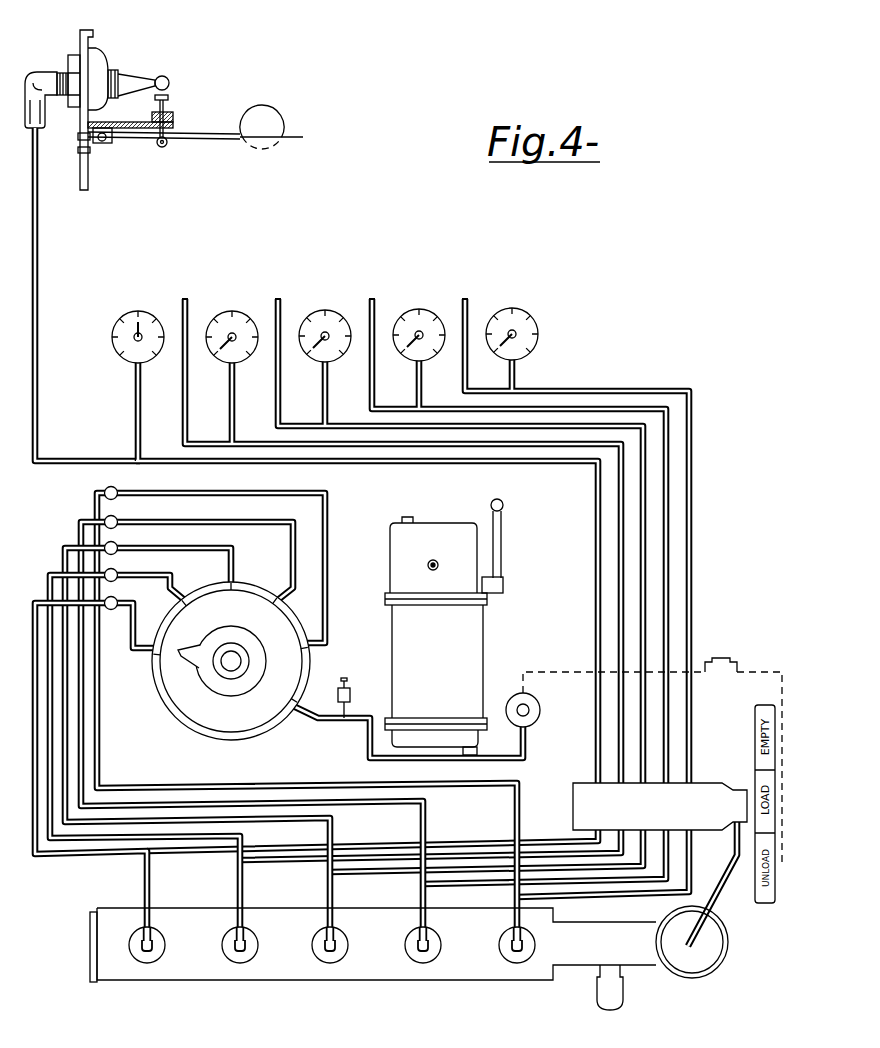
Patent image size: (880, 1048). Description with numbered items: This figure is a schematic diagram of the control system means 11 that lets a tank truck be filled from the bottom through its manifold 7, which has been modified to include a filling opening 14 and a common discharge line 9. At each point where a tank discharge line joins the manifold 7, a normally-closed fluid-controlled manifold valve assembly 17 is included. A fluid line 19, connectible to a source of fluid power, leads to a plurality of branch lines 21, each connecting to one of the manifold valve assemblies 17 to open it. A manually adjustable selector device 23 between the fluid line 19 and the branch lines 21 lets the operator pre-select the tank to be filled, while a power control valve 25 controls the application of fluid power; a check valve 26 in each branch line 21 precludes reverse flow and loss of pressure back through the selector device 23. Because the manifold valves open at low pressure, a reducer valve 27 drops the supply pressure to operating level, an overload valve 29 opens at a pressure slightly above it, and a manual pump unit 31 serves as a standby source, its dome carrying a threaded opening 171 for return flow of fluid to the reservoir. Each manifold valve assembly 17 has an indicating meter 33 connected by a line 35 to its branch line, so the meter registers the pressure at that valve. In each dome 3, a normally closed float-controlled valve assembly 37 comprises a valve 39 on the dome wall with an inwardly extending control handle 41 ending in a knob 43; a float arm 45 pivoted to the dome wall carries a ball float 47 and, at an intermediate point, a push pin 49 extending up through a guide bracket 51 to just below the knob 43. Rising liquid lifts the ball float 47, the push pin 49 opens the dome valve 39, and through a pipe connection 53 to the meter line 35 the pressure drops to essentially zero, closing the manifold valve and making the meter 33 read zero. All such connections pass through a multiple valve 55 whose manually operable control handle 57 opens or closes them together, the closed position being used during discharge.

The dome 3 is at (80, 43).
The manifold 7 is at (373, 939).
The common discharge line 9 is at (622, 990).
The control system means 11 is at (403, 502).
The filling opening 14 is at (714, 960).
The manifold valve assembly 17 is at (159, 957).
The fluid line 19 is at (367, 740).
The branch lines 21 is at (43, 590).
The selector device 23 is at (196, 694).
The power control valve 25 is at (541, 709).
The check valve 26 is at (117, 490).
The reducer valve 27 is at (732, 658).
The overload valve 29 is at (351, 689).
The manual pump unit 31 is at (443, 664).
The indicating meter 33 is at (127, 313).
The meter line 35 is at (610, 389).
The float-controlled valve assembly 37 is at (145, 161).
The valve 39 is at (100, 68).
The control handle 41 is at (137, 73).
The knob 43 is at (169, 78).
The float arm 45 is at (197, 138).
The ball float 47 is at (277, 117).
The push pin 49 is at (168, 99).
The guide bracket 51 is at (140, 120).
The pipe connection 53 is at (41, 262).
The multiple valve 55 is at (655, 814).
The control handle 57 is at (723, 909).
The threaded opening 171 is at (438, 561).